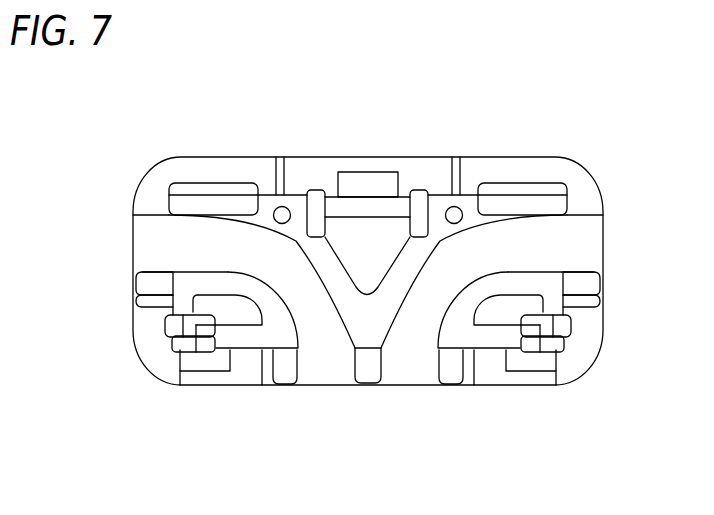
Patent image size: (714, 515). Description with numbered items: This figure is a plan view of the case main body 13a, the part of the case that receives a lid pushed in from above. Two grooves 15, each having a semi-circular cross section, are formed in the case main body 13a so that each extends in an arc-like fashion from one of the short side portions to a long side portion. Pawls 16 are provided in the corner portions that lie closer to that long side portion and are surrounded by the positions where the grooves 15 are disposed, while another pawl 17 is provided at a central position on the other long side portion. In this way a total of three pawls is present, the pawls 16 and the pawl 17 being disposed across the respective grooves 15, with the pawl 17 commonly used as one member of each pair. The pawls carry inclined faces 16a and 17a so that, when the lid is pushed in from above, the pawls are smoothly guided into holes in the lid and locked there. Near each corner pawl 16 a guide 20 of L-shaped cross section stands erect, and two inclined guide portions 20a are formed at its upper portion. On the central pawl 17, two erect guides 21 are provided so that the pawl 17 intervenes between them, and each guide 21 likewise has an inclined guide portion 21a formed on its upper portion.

The case main body 13a is at (150, 160).
The groove 15 is at (226, 237).
The inclined face 17a is at (373, 158).
The pawl 17 is at (358, 183).
The inclined guide portion 21a is at (386, 335).
The erect guide 21 is at (317, 217).
The inclined face 16a is at (377, 363).
The pawl 16 is at (204, 352).
The guide 20 is at (170, 313).
The inclined guide portion 20a is at (166, 322).